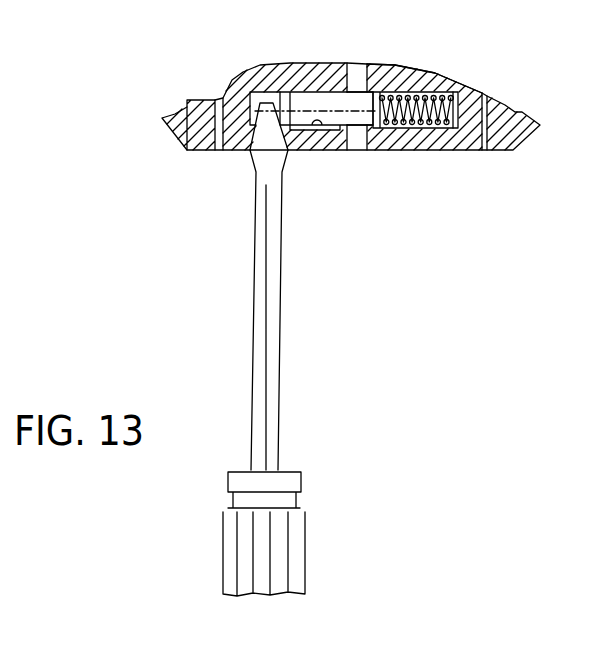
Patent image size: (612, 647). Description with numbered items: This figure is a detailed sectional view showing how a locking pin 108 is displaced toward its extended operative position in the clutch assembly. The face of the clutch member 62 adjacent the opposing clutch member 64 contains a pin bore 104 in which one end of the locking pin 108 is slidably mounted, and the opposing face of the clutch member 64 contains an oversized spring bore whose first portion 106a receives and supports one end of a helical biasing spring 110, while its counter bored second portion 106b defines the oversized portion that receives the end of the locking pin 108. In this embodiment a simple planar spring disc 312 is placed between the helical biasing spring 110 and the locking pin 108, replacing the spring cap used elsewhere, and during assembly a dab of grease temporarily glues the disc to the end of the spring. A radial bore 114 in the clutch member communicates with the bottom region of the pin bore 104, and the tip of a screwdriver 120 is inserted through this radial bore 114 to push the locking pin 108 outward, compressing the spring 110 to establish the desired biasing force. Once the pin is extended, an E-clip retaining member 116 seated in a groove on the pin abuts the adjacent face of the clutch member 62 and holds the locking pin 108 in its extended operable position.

The clutch member 62 is at (187, 142).
The clutch member 64 is at (520, 135).
The pin bore 104 is at (314, 128).
The spring bore first portion 106a is at (457, 128).
The spring bore second portion 106b is at (396, 130).
The locking pin 108 is at (302, 103).
The helical biasing spring 110 is at (445, 77).
The radial bore 114 is at (245, 150).
The E-clip retaining member 116 is at (349, 130).
The screwdriver 120 is at (268, 370).
The planar spring disc 312 is at (383, 72).